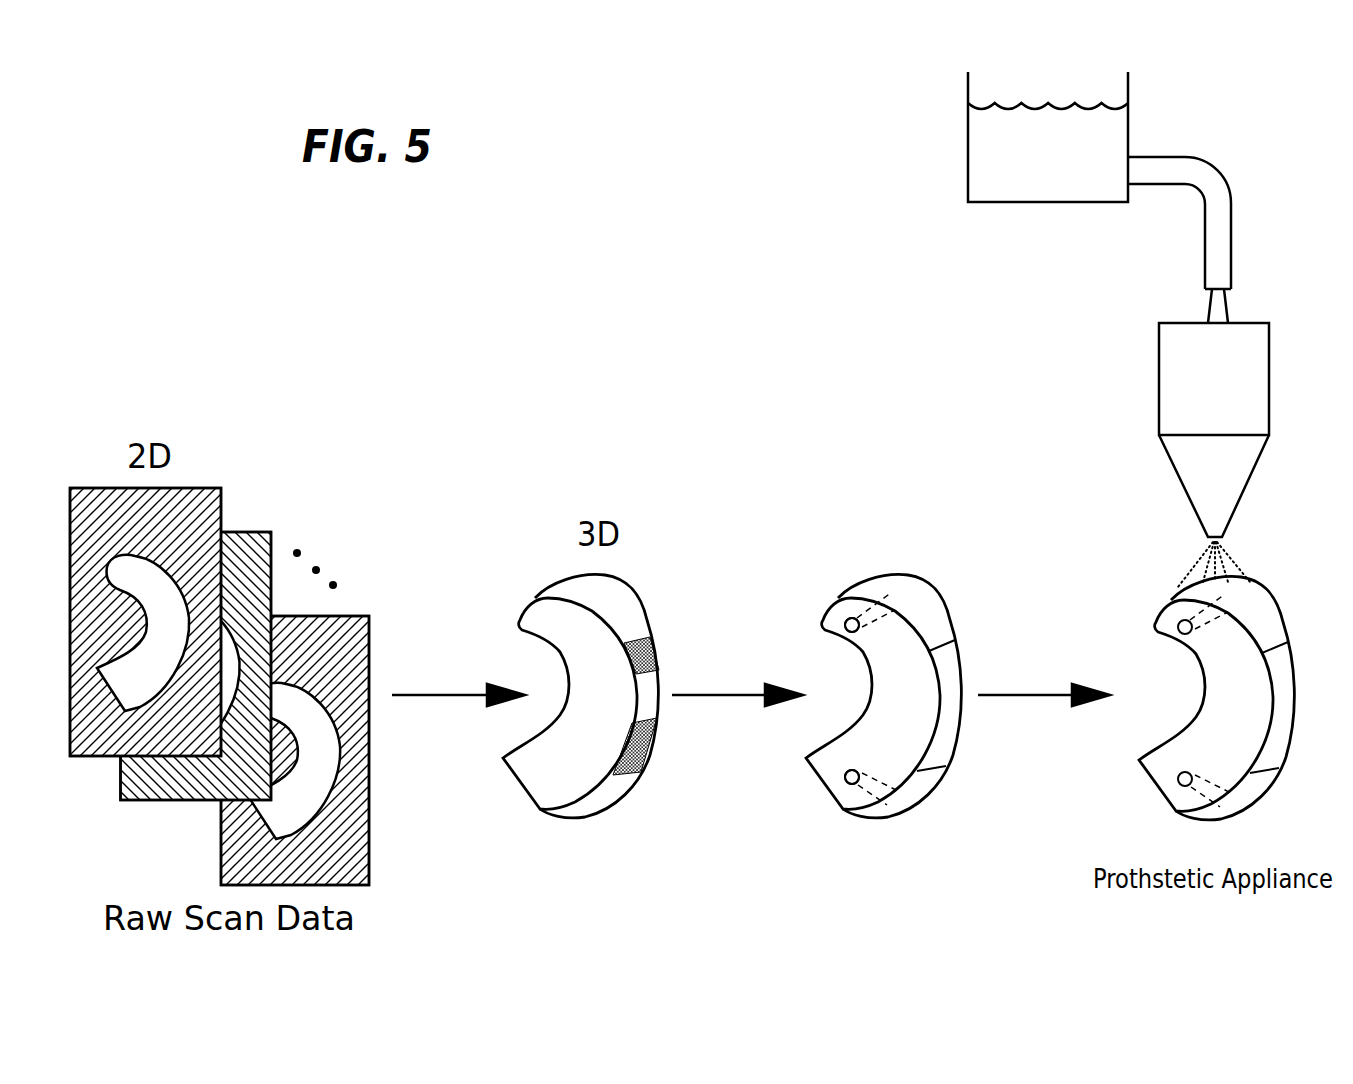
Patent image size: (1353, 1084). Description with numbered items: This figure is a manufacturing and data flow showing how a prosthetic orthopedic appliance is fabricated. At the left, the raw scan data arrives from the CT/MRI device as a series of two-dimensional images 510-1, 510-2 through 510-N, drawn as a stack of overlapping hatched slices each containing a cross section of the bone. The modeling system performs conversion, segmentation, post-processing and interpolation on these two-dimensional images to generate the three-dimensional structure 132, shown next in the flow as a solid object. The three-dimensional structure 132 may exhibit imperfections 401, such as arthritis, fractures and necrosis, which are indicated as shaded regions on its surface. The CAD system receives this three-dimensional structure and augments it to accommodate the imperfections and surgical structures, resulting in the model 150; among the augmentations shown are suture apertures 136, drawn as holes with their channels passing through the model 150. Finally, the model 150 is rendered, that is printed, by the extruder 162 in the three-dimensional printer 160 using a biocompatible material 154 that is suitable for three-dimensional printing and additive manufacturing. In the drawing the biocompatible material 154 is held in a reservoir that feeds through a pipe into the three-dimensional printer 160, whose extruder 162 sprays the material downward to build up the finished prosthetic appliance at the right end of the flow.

The 2D image 510-1 is at (210, 487).
The 2D image 510-2 is at (264, 528).
The 2D image 510-N is at (360, 614).
The 3D structure 132 is at (608, 812).
The imperfections 401 is at (650, 740).
The suture apertures 136 is at (843, 625).
The model 150 is at (920, 798).
The biocompatible material 154 is at (1022, 147).
The 3D printer 160 is at (1128, 357).
The extruder 162 is at (1173, 467).